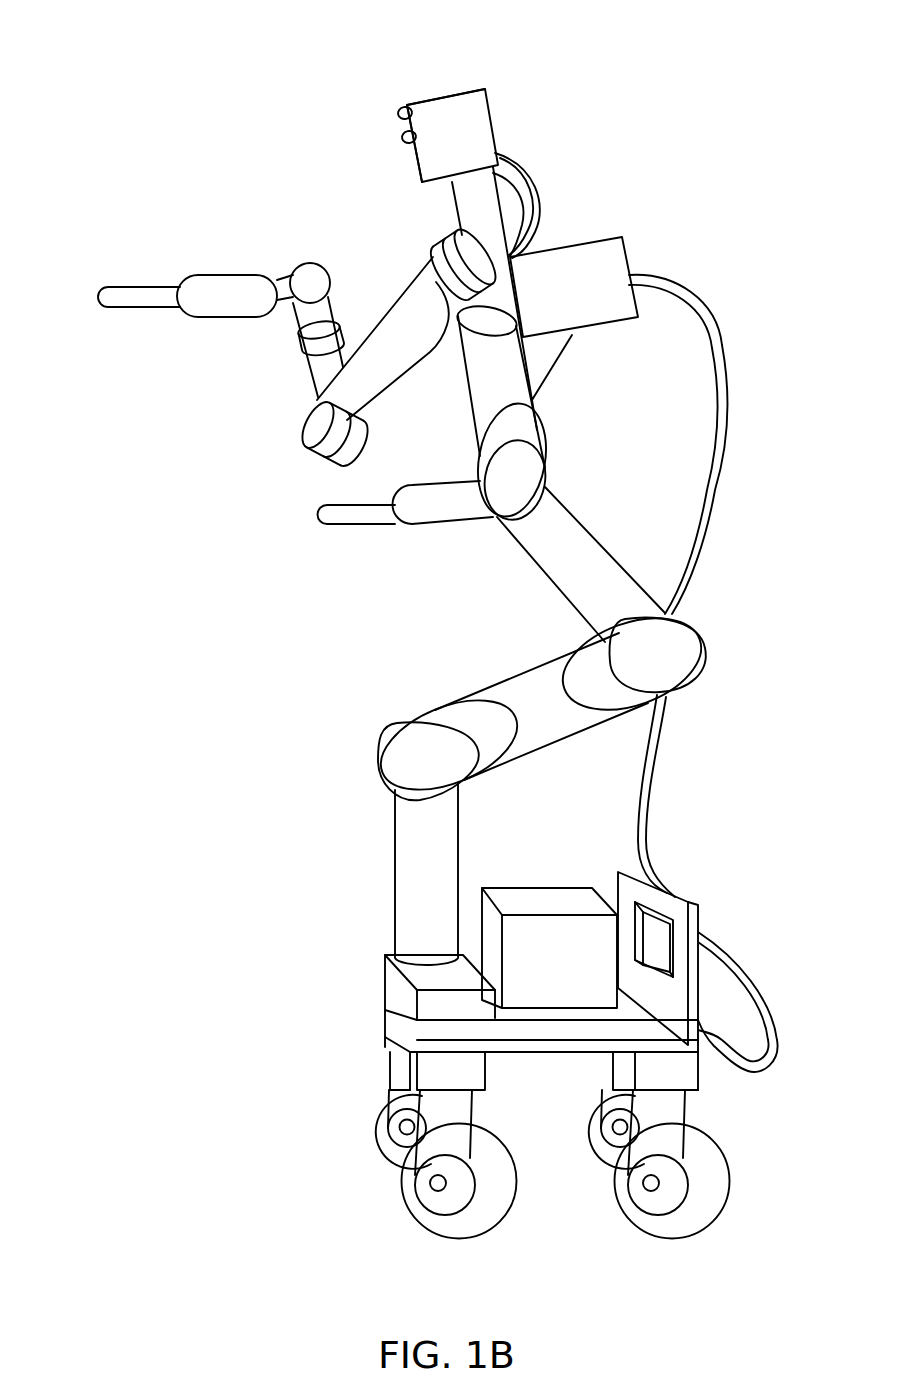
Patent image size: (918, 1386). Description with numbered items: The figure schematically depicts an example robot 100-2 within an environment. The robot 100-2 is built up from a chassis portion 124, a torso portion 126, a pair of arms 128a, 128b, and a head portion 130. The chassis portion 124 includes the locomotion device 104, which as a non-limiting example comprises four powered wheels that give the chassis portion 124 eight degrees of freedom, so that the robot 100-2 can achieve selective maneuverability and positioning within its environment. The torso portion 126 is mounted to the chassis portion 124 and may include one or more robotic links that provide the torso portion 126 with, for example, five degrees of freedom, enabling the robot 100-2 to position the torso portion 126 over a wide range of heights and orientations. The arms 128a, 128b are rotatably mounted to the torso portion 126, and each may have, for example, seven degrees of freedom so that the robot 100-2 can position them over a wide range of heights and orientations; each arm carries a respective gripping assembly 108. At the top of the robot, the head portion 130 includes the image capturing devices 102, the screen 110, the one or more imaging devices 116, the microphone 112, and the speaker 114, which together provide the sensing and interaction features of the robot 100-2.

The robot 100-2 is at (718, 143).
The image capturing devices 102 is at (392, 107).
The head portion 130 is at (422, 95).
The imaging devices 116 is at (393, 133).
The screen 110 is at (517, 147).
The microphone 112 is at (542, 163).
The speaker 114 is at (563, 220).
The gripping assembly 108 is at (85, 257).
The arm 128a is at (290, 338).
The arm 128b is at (397, 537).
The torso portion 126 is at (717, 650).
The chassis portion 124 is at (750, 977).
The locomotion device 104 is at (737, 1167).